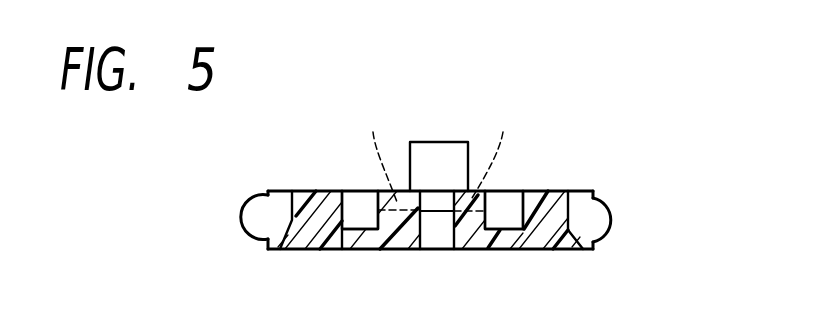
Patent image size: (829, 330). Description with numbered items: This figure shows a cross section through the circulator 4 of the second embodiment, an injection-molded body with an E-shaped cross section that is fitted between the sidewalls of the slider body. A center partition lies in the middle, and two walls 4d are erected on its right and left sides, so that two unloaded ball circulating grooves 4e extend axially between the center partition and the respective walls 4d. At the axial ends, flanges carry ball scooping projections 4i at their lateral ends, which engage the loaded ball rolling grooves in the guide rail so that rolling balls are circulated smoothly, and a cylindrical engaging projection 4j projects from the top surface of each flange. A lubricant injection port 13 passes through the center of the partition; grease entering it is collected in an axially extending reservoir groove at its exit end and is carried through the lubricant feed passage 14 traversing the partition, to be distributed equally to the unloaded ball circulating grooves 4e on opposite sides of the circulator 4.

The contact holder 4 is at (598, 172).
The contact supporting portion 4d is at (320, 200).
The recess 4e is at (358, 220).
The spherical projection 4i is at (250, 214).
The central projection 4j is at (447, 150).
The center contact 13 is at (437, 218).
The slit 14 is at (437, 158).